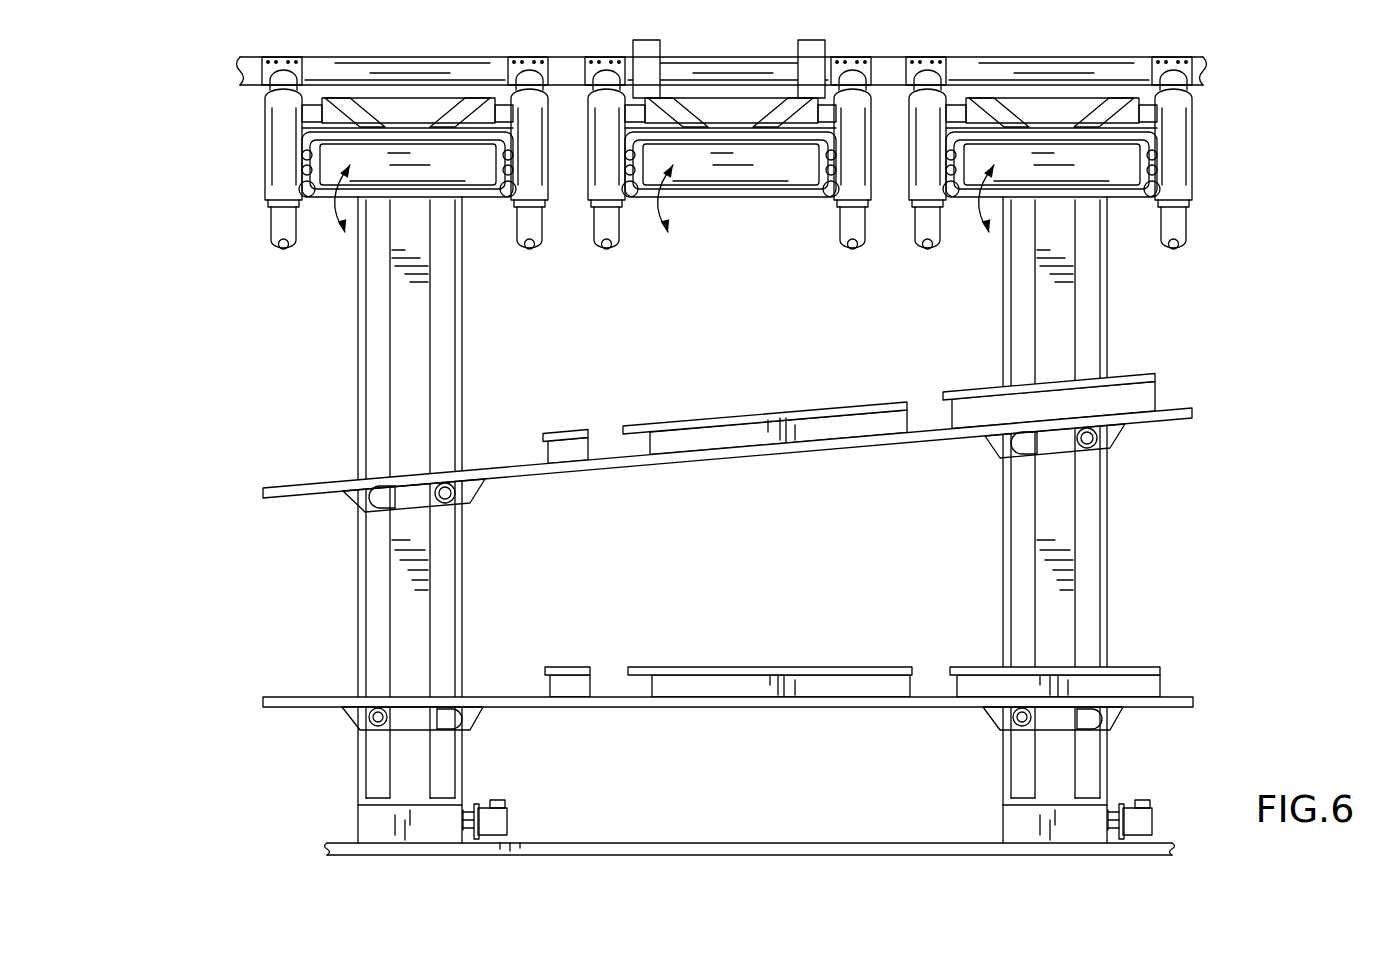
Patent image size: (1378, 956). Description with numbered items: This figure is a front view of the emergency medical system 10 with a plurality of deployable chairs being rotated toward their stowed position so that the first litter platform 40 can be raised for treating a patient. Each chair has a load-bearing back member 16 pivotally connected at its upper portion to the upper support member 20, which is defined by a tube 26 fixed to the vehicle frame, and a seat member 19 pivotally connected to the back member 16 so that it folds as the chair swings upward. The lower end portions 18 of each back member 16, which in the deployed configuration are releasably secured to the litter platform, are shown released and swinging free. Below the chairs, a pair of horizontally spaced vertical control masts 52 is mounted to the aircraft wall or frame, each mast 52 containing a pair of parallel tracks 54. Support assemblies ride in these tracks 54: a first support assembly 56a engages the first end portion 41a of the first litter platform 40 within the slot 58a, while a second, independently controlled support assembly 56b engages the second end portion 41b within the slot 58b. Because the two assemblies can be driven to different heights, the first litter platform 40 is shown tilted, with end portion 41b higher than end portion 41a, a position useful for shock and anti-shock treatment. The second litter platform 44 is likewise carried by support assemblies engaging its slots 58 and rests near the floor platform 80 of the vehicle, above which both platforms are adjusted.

The emergency medical system 10 is at (735, 443).
The back member 16 is at (262, 152).
The lower end portions 18 is at (250, 241).
The seat member 19 is at (461, 178).
The upper support member 20 is at (228, 69).
The tube 26 is at (668, 60).
The first litter platform 40 is at (1207, 412).
The first end portion 41a is at (333, 468).
The second end portion 41b is at (1171, 395).
The second litter platform 44 is at (1205, 700).
The vertical control masts 52 is at (470, 375).
The tracks 54 is at (374, 563).
The first support assembly 56a is at (454, 473).
The second support assembly 56b is at (1098, 415).
The slots 58 is at (452, 720).
The slot 58a is at (375, 493).
The slot 58b is at (1021, 441).
The floor platform 80 is at (612, 842).